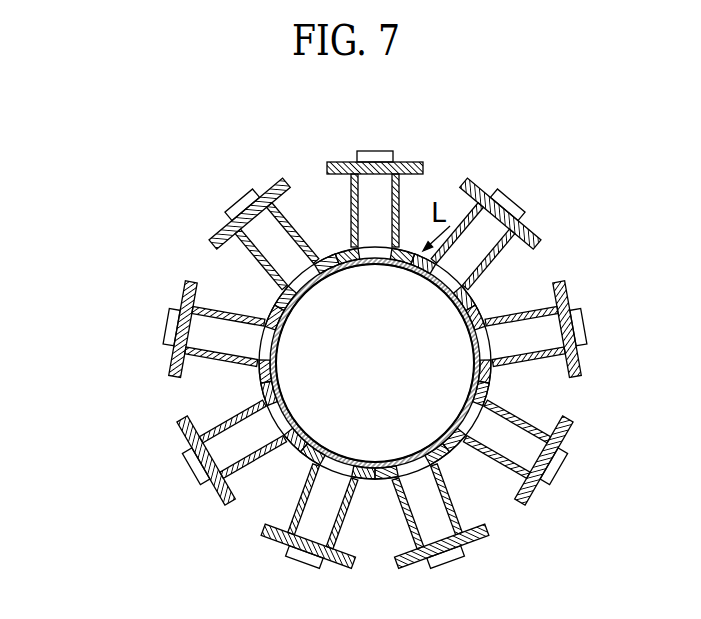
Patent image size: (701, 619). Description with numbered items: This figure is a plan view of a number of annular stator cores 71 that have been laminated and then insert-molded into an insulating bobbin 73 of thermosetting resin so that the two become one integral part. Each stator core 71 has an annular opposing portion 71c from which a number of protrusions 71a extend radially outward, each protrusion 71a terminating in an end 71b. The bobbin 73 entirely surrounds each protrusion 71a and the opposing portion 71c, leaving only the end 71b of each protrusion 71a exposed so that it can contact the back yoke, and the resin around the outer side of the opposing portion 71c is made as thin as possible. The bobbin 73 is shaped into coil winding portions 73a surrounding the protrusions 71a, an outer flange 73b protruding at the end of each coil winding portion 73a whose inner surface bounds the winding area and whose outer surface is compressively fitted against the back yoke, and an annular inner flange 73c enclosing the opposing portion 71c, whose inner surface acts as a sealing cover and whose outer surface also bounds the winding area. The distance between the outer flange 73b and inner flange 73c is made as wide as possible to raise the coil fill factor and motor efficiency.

The stator core 71 is at (545, 215).
The protrusion 71a is at (247, 460).
The end of protrusion 71b is at (187, 470).
The opposing portion 71c is at (278, 425).
The bobbin 73 is at (548, 221).
The coil winding portion 73a is at (250, 242).
The outer flange 73b is at (210, 241).
The inner flange 73c is at (278, 305).